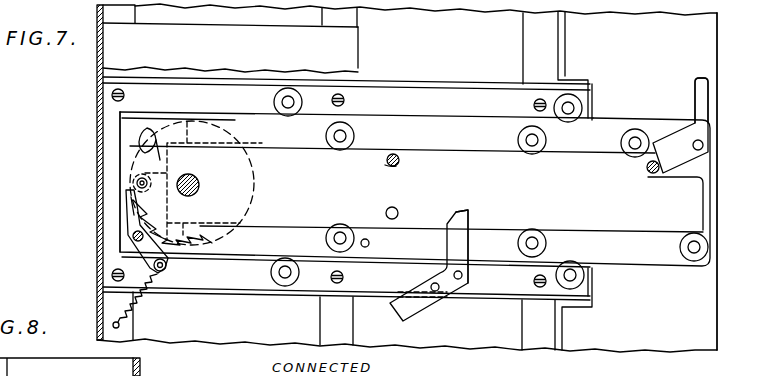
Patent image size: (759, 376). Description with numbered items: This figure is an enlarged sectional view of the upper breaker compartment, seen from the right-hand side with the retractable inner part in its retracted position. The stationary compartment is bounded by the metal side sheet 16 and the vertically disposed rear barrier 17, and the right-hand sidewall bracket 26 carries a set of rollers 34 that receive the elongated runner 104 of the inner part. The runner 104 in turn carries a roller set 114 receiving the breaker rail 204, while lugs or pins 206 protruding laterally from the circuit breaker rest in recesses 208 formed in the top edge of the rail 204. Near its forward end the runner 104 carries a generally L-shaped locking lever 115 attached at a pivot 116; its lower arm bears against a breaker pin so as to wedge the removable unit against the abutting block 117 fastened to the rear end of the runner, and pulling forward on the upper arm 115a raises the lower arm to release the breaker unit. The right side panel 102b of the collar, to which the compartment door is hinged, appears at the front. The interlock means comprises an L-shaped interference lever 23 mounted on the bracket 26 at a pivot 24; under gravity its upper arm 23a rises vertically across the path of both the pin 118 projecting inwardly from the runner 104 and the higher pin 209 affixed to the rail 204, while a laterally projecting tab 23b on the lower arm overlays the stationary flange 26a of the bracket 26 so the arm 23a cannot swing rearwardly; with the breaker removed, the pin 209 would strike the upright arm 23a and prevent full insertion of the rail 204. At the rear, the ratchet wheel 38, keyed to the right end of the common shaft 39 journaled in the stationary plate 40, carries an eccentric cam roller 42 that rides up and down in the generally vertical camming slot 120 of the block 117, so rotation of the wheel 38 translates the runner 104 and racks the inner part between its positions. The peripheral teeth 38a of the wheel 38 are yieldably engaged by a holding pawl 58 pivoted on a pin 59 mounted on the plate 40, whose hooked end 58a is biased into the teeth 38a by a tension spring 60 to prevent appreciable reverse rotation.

The metal side sheet 16 is at (488, 344).
The rear barrier 17 is at (98, 275).
The interference lever 23 is at (420, 308).
The upper arm of interference lever 23a is at (470, 218).
The tab or pin 23b is at (430, 285).
The pivot 24 is at (462, 276).
The right-hand sidewall bracket 26 is at (418, 93).
The stationary flange 26a is at (365, 298).
The rollers 34 is at (288, 88).
The ratchet wheel 38 is at (228, 135).
The peripheral teeth 38a is at (214, 243).
The common shaft 39 is at (200, 185).
The stationary plate 40 is at (358, 57).
The eccentric cam roller 42 is at (170, 167).
The holding pawl 58 is at (128, 216).
The hooked end 58a is at (128, 190).
The pin 59 is at (133, 237).
The tension spring 60 is at (143, 298).
The right side panel 102b is at (648, 344).
The runner 104 is at (252, 114).
The roller set 114 is at (325, 137).
The locking lever 115 is at (680, 135).
The upper arm of locking lever 115a is at (702, 77).
The pivot 116 is at (693, 146).
The abutting block 117 is at (125, 135).
The pin 118 is at (369, 244).
The camming slot 120 is at (150, 128).
The rail 204 is at (605, 233).
The pins 206 is at (388, 167).
The recesses 208 is at (397, 156).
The pin 209 is at (386, 212).